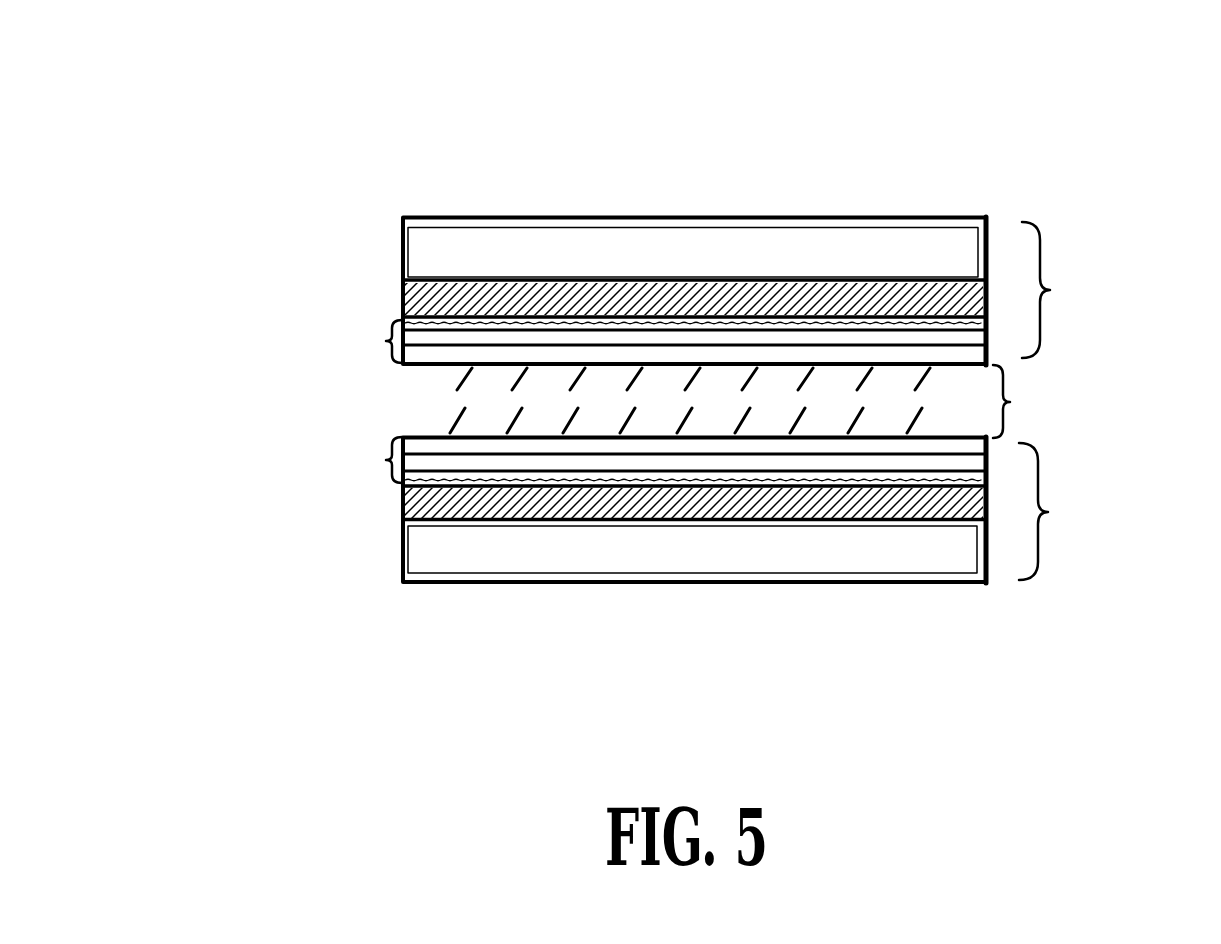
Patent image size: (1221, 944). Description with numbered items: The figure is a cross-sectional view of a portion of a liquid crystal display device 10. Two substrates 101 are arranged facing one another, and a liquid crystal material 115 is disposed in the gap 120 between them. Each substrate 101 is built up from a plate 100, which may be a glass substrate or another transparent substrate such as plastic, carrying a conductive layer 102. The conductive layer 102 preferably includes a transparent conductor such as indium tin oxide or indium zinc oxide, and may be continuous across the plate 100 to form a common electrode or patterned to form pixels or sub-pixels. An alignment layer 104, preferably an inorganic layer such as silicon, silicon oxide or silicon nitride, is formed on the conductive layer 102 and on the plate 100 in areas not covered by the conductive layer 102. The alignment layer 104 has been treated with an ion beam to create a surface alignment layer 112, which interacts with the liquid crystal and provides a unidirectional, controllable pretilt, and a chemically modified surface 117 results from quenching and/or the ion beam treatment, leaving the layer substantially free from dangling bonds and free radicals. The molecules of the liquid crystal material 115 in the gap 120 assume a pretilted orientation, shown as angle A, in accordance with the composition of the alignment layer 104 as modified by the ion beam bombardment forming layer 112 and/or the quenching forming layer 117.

The liquid crystal display device 10 is at (1028, 112).
The plate 100 is at (400, 230).
The substrate 101 is at (665, 402).
The conductive layer 102 is at (400, 300).
The alignment layer 104 is at (383, 338).
The surface alignment layer 112 is at (460, 378).
The liquid crystal material 115 is at (455, 433).
The chemically modified surface 117 is at (452, 333).
The gap 120 is at (687, 437).
The angle A is at (630, 380).